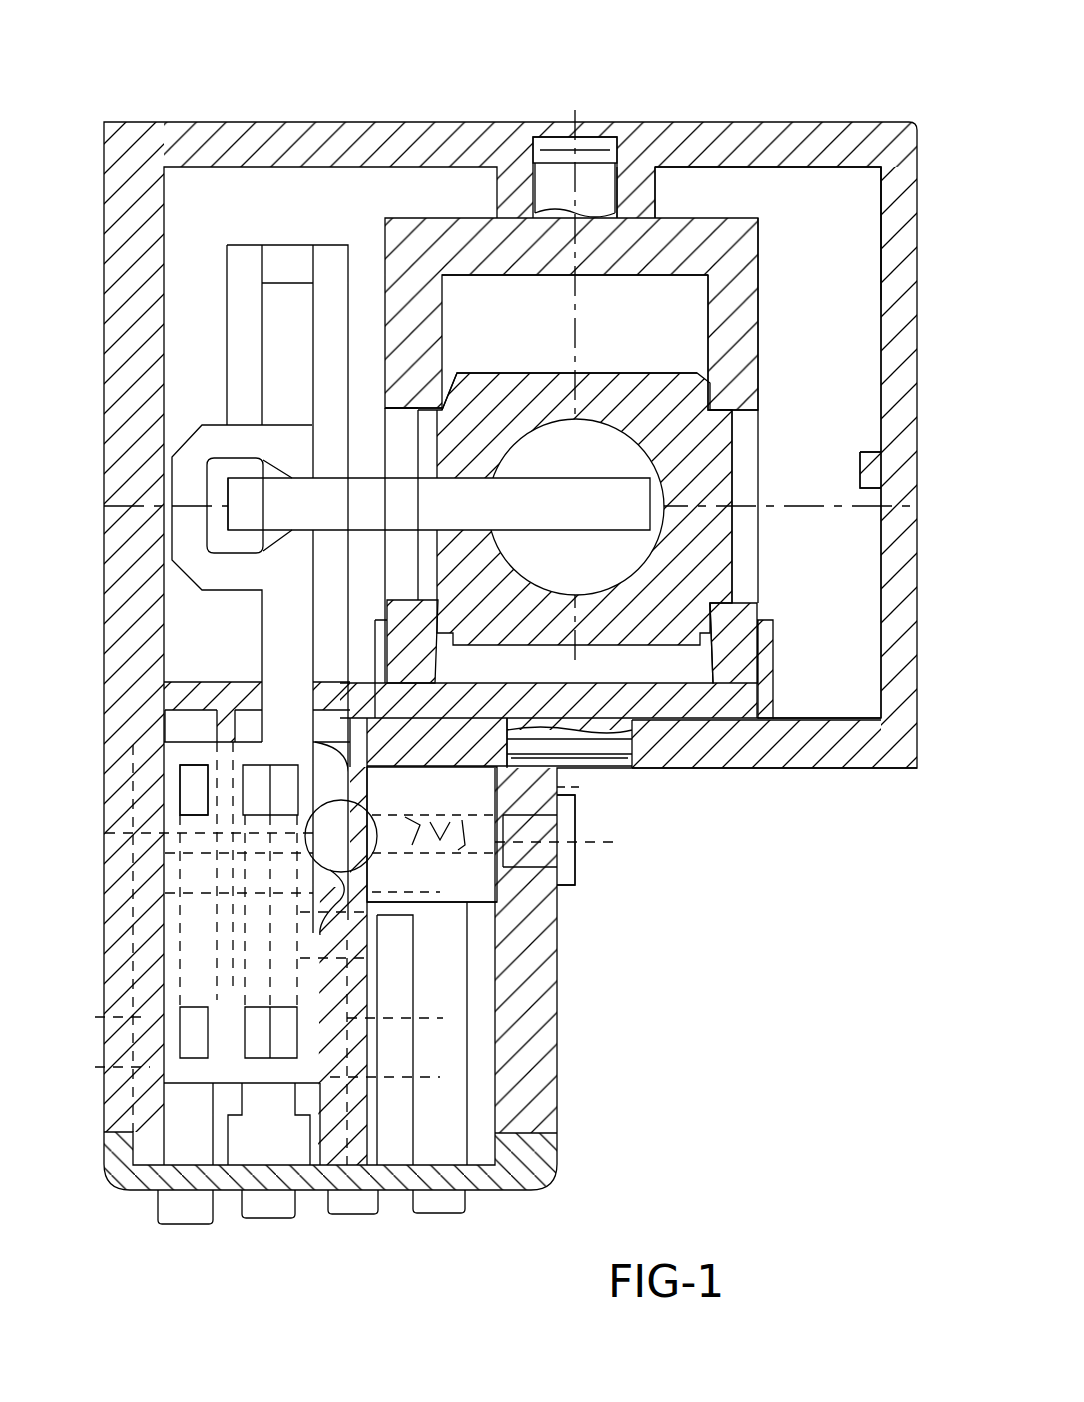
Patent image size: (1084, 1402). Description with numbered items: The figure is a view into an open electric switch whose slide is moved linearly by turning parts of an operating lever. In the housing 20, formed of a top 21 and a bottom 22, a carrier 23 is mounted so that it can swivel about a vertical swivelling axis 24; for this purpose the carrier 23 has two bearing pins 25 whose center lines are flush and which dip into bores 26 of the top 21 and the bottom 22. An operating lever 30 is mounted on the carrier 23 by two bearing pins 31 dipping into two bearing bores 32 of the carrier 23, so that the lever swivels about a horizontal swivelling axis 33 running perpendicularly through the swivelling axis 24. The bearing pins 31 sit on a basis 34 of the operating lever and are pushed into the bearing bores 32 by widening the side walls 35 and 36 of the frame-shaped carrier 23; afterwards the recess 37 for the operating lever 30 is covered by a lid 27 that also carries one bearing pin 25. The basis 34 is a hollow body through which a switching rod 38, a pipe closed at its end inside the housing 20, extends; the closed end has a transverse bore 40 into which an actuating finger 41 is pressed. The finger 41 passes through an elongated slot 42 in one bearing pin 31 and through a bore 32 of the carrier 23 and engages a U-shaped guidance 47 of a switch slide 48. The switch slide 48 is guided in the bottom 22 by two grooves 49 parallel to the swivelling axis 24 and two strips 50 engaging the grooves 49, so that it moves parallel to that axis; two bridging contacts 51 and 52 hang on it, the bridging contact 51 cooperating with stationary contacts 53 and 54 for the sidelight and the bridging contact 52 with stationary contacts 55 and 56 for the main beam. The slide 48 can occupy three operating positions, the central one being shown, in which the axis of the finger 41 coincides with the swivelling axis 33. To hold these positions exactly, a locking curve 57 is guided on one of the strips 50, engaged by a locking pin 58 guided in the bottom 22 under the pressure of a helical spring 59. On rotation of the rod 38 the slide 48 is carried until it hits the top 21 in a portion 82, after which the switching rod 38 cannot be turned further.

The housing 20 is at (783, 85).
The top 21 is at (722, 122).
The bottom 22 is at (850, 752).
The carrier 23 is at (760, 214).
The swivelling axis 24 is at (576, 112).
The bearing pins 25 is at (650, 165).
The bores 26 is at (530, 140).
The lid 27 is at (768, 690).
The operating lever 30 is at (658, 300).
The bearing pins 31 is at (422, 447).
The bearing bores 32 is at (393, 440).
The swivelling axis 33 is at (848, 507).
The basis 34 is at (463, 405).
The side wall 35 is at (748, 356).
The side wall 36 is at (392, 300).
The recess 37 is at (705, 296).
The switching rod 38 is at (546, 428).
The transverse bore 40 is at (544, 524).
The actuating finger 41 is at (628, 492).
The elongated slot 42 is at (425, 556).
The U-shaped guidance 47 is at (197, 425).
The switch slide 48 is at (190, 1073).
The grooves 49 is at (140, 1000).
The strips 50 is at (150, 1062).
The bridging contact 51 is at (190, 790).
The bridging contact 52 is at (245, 758).
The stationary contact 53 is at (112, 832).
The stationary contact 54 is at (185, 988).
The stationary contact 55 is at (432, 1019).
The stationary contact 56 is at (303, 1104).
The locking curve 57 is at (450, 812).
The locking pin 58 is at (597, 791).
The helical spring 59 is at (578, 840).
The portion 82 is at (275, 290).